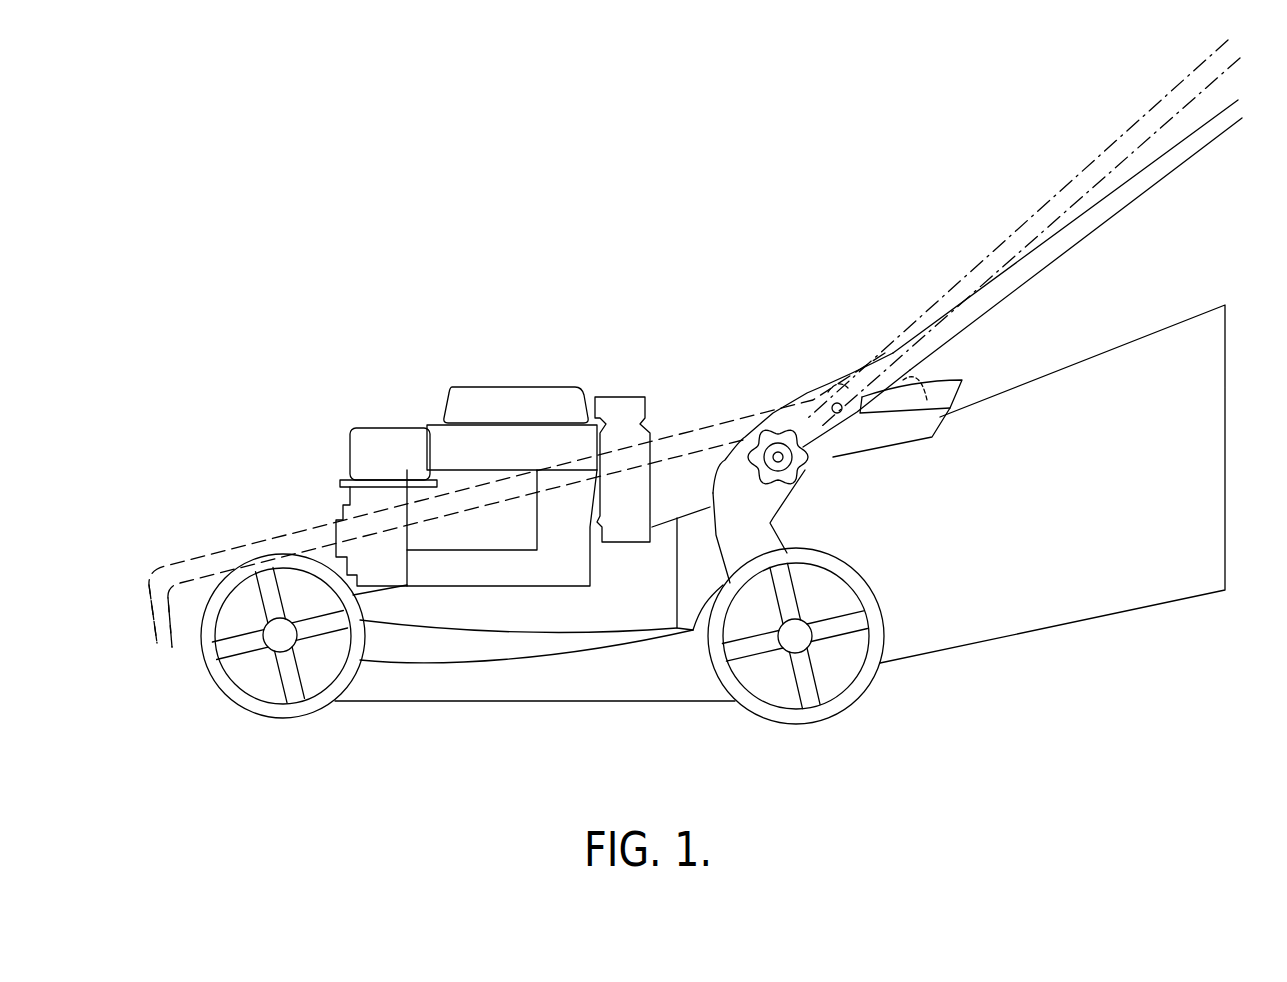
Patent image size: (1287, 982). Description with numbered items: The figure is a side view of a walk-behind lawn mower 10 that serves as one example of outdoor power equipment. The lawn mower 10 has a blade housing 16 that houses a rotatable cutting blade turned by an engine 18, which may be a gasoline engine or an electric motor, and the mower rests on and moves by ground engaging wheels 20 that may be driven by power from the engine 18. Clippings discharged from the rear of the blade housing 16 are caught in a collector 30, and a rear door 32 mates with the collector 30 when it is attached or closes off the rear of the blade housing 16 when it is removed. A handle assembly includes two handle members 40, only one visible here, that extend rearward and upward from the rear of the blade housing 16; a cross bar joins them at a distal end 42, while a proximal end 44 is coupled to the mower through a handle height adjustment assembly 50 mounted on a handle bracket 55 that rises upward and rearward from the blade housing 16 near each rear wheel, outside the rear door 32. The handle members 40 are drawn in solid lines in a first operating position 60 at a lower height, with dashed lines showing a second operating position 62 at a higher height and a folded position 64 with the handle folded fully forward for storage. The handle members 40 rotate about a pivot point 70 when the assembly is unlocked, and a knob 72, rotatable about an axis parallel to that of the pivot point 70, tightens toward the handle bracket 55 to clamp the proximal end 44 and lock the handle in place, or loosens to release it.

The walk-behind lawn mower 10 is at (282, 225).
The blade housing 16 is at (507, 685).
The engine 18 is at (458, 462).
The ground engaging wheels 20 is at (275, 710).
The collector 30 is at (1068, 600).
The rear door 32 is at (963, 380).
The handle members 40 is at (1157, 175).
The distal end 42 is at (172, 647).
The proximal end 44 is at (912, 380).
The handle height adjustment assembly 50 is at (770, 403).
The handle bracket 55 is at (768, 503).
The first operating position 60 is at (1040, 272).
The second operating position 62 is at (1098, 160).
The folded position 64 is at (285, 536).
The pivot point 70 is at (836, 403).
The knob 72 is at (797, 467).